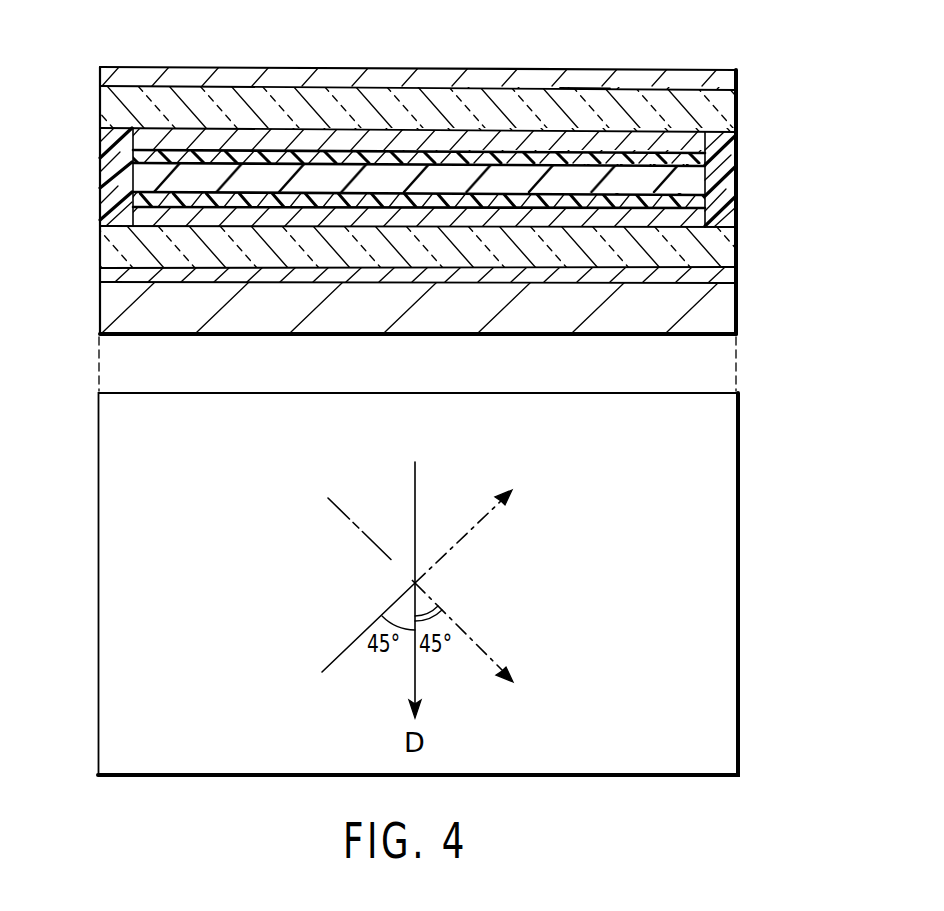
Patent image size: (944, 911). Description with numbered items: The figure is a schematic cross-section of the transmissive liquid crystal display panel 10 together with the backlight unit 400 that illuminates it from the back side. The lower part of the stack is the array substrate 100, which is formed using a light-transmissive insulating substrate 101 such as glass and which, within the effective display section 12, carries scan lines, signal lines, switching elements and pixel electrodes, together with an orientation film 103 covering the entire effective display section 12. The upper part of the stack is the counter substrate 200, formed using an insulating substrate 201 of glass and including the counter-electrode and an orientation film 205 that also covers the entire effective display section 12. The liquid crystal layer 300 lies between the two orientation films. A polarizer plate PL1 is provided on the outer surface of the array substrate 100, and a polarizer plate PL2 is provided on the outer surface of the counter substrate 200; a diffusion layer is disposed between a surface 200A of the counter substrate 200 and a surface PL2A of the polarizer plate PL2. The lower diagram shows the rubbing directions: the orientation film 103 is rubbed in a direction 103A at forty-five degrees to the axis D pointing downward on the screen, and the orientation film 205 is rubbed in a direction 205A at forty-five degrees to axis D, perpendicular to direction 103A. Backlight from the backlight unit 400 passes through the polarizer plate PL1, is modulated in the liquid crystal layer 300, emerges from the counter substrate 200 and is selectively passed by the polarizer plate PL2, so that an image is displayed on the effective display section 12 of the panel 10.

The liquid crystal display panel 10 is at (822, 88).
The effective display section 12 is at (140, 131).
The array substrate 100 is at (743, 196).
The insulating substrate 101 is at (118, 247).
The orientation film 103 is at (147, 187).
The rubbing direction 103A is at (487, 661).
The counter substrate 200 is at (743, 89).
The insulating substrate 201 is at (118, 106).
The surface of the counter substrate 200A is at (442, 68).
The orientation film 205 is at (147, 155).
The rubbing direction 205A is at (483, 517).
The liquid crystal layer 300 is at (757, 165).
The backlight unit 400 is at (723, 313).
The polarizer plate PL1 is at (724, 277).
The polarizer plate PL2 is at (724, 78).
The surface of the polarizer plate PL2A is at (583, 70).